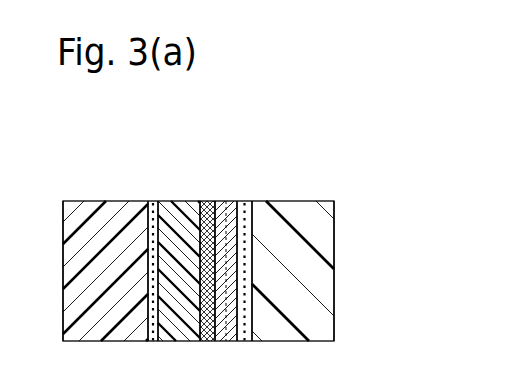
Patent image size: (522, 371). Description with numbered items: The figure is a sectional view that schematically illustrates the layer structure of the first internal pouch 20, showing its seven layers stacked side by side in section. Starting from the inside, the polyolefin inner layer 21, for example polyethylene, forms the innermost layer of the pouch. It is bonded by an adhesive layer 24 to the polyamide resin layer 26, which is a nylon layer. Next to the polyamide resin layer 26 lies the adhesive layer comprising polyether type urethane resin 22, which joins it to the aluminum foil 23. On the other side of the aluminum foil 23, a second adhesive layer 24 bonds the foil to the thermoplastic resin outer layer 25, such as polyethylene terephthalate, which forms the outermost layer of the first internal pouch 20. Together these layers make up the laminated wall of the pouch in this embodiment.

The first internal pouch 20 is at (330, 187).
The polyolefin inner layer 21 is at (93, 200).
The adhesive layer comprising polyether type urethane resin 22 is at (208, 200).
The aluminum foil 23 is at (228, 200).
The adhesive layer 24 is at (152, 200).
The thermoplastic resin outer layer 25 is at (308, 200).
The polyamide resin layer 26 is at (183, 200).